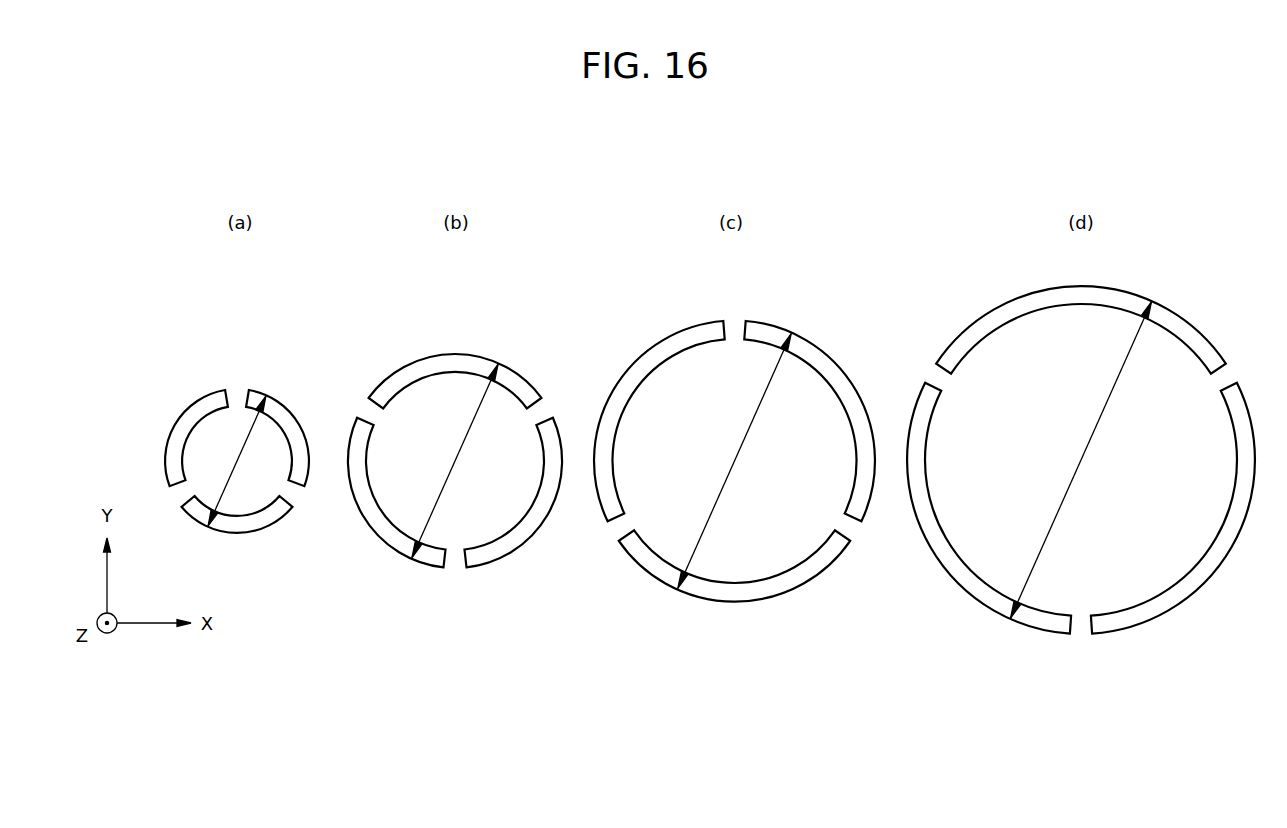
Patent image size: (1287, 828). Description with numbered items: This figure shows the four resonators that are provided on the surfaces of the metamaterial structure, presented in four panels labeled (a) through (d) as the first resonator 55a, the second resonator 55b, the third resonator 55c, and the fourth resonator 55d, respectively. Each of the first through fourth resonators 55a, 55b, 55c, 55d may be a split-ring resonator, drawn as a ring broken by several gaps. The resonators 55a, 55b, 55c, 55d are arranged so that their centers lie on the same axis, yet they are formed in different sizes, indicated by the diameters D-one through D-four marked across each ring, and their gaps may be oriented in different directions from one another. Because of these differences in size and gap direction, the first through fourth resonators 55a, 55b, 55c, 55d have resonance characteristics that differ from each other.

The first resonator 55a is at (273, 538).
The second resonator 55b is at (515, 568).
The third resonator 55c is at (818, 600).
The fourth resonator 55d is at (1192, 620).